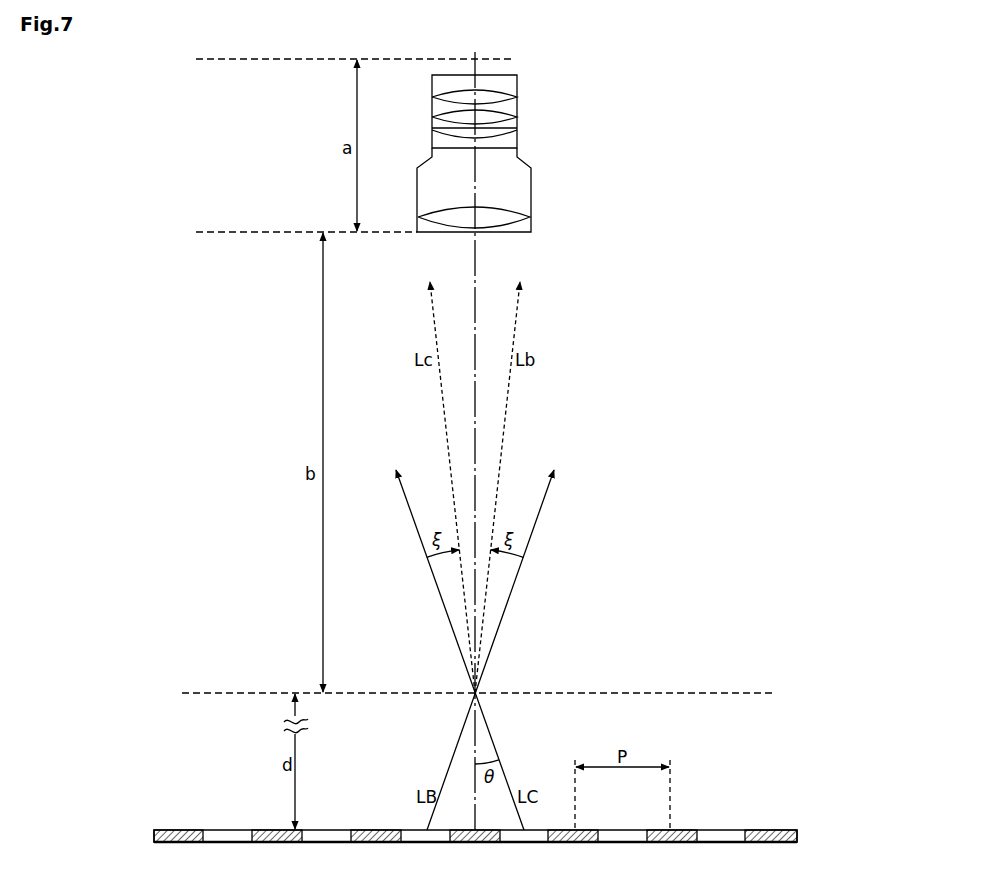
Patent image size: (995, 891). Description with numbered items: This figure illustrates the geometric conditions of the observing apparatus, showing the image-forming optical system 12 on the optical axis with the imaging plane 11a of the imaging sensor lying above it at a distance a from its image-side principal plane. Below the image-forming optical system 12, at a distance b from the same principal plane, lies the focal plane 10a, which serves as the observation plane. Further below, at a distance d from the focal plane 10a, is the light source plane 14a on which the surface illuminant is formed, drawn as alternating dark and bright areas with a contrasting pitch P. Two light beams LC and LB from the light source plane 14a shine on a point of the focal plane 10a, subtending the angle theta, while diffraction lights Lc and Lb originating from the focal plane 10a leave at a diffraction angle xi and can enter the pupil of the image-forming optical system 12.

The imaging plane 11a is at (503, 60).
The image-forming optical system 12 is at (552, 158).
The focal plane 10a is at (760, 693).
The light source plane 14a is at (788, 830).